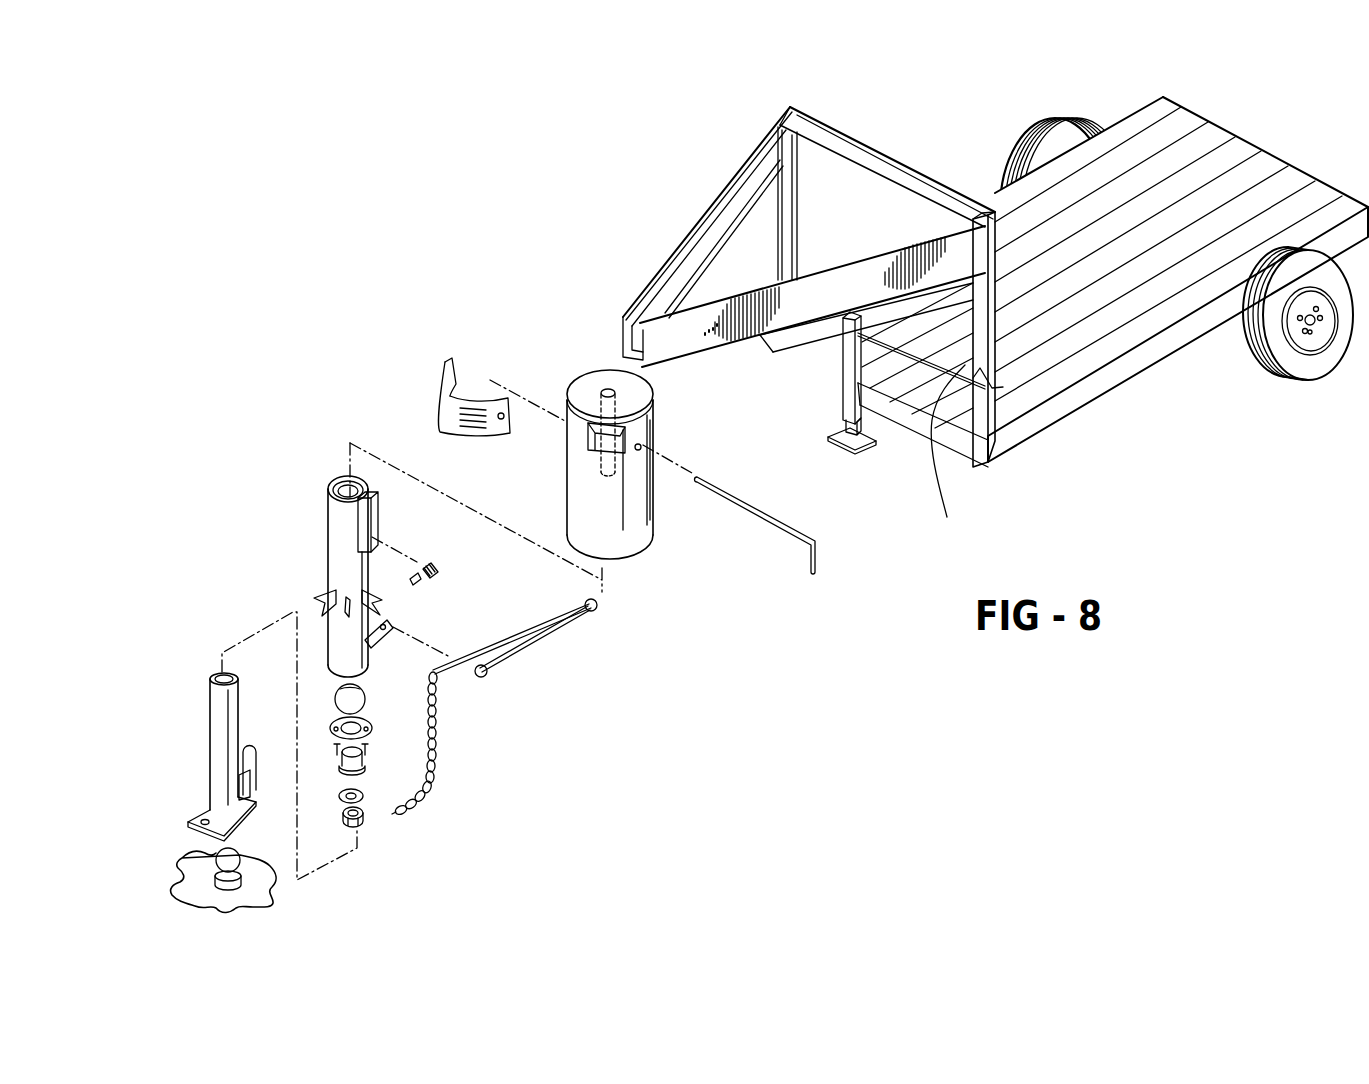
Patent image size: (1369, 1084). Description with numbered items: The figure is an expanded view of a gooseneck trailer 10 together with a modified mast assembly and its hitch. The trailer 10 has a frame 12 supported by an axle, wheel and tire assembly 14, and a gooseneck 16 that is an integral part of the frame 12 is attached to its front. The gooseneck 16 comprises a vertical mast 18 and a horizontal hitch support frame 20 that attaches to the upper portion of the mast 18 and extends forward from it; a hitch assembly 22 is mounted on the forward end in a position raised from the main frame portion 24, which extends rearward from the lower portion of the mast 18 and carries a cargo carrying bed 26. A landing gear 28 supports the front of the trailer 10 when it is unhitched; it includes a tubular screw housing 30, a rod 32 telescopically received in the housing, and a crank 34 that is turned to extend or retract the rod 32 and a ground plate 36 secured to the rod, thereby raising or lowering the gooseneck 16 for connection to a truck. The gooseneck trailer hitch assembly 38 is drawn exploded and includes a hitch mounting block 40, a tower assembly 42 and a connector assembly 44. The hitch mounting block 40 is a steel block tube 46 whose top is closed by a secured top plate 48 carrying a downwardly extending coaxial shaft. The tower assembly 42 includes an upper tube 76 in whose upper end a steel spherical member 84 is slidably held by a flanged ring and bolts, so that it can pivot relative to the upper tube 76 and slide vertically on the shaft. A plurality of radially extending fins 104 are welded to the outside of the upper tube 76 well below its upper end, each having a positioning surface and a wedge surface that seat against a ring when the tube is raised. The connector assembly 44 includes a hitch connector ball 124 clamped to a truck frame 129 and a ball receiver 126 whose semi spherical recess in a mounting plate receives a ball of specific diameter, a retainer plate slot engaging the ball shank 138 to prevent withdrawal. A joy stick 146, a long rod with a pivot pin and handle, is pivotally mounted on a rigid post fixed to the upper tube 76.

The gooseneck trailer 10 is at (1050, 112).
The frame 12 is at (962, 447).
The axle, wheel and tire assembly 14 is at (1295, 366).
The gooseneck 16 is at (671, 238).
The vertical mast 18 is at (890, 150).
The hitch support frame 20 is at (768, 330).
The hitch assembly 22 is at (365, 360).
The main frame portion 24 is at (1082, 393).
The cargo carrying bed 26 is at (1185, 122).
The landing gear 28 is at (855, 455).
The tubular screw housing 30 is at (840, 400).
The rod 32 is at (867, 432).
The crank 34 is at (948, 453).
The ground plate 36 is at (867, 450).
The gooseneck trailer hitch assembly 38 is at (676, 533).
The hitch mounting block 40 is at (553, 470).
The tower assembly 42 is at (418, 544).
The connector assembly 44 is at (286, 884).
The steel block tube 46 is at (633, 548).
The top plate 48 is at (587, 385).
The upper tube 76 is at (327, 510).
The spherical member 84 is at (338, 692).
The fins 104 is at (327, 590).
The hitch connector ball 124 is at (207, 902).
The ball receiver 126 is at (193, 813).
The truck frame 129 is at (372, 918).
The ball shank 138 is at (207, 860).
The joy stick 146 is at (577, 620).